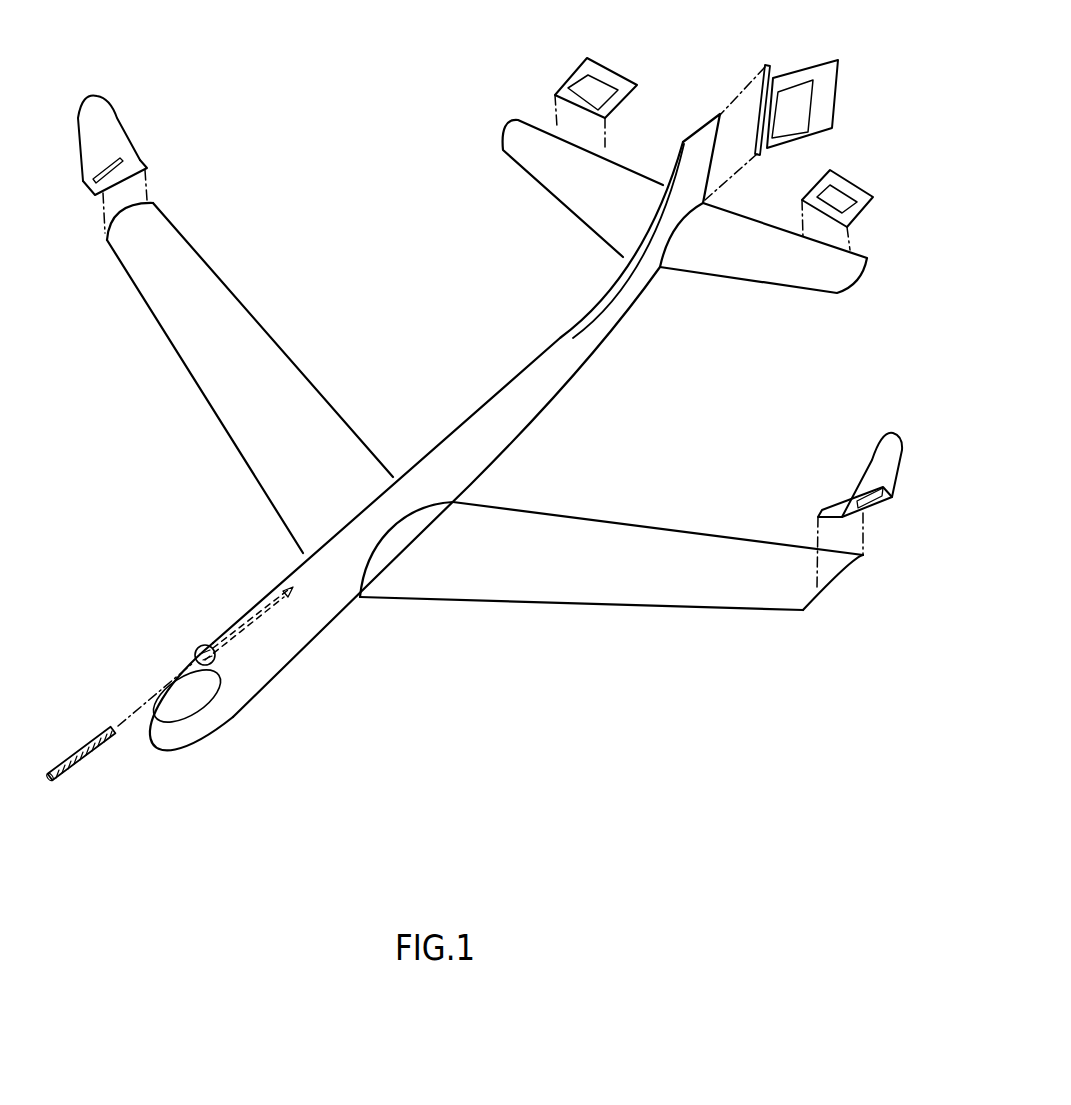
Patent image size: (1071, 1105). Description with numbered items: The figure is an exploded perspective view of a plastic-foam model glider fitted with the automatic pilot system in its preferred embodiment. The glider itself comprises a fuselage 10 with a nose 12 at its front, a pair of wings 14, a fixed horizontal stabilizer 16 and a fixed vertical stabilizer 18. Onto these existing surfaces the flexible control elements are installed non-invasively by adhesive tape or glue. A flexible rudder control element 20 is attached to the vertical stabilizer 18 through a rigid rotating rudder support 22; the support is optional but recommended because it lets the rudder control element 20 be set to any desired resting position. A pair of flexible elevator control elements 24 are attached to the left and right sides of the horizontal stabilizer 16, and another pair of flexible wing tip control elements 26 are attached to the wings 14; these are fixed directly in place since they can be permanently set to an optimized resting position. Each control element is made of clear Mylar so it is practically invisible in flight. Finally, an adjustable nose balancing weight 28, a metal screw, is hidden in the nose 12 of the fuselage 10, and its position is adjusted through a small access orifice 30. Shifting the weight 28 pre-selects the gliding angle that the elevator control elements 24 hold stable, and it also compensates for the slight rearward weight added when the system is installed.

The fuselage 10 is at (537, 420).
The nose 12 is at (233, 717).
The wings 14 is at (288, 358).
The horizontal stabilizer 16 is at (575, 218).
The vertical stabilizer 18 is at (680, 147).
The flexible rudder control element 20 is at (847, 62).
The rudder support 22 is at (767, 64).
The flexible elevator control elements 24 is at (581, 63).
The flexible wing tip control elements 26 is at (122, 124).
The nose balancing weight 28 is at (92, 740).
The access orifice 30 is at (198, 647).